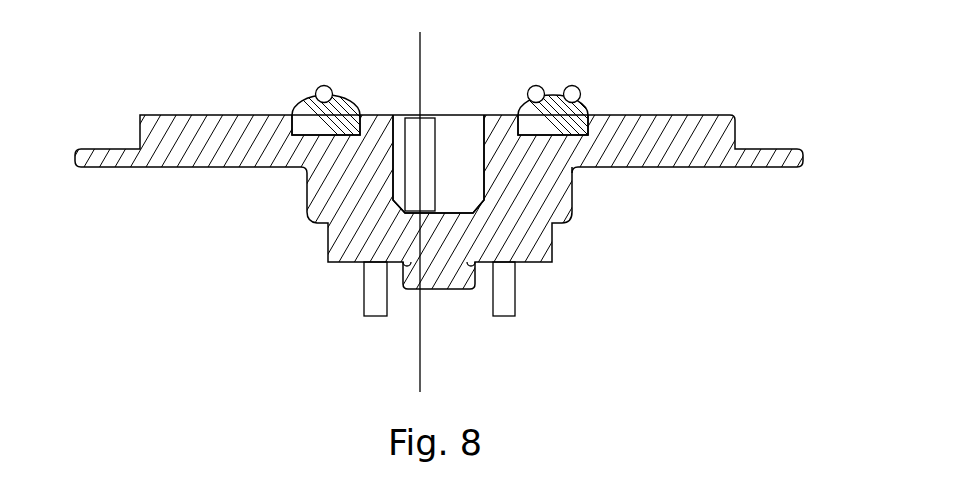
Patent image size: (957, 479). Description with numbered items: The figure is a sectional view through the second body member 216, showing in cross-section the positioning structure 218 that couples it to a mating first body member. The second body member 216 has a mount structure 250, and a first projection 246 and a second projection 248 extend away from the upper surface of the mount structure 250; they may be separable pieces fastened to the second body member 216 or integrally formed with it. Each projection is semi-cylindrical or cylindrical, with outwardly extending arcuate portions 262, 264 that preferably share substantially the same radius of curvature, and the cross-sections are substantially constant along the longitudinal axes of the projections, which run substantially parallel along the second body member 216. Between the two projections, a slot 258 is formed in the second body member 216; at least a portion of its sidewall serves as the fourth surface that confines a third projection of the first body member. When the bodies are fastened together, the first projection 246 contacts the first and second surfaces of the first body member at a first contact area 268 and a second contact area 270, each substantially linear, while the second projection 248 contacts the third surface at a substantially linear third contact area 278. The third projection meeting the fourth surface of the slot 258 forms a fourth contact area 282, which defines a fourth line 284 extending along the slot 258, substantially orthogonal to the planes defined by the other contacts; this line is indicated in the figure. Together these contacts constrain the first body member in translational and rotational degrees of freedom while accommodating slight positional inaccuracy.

The second body member 216 is at (710, 141).
The positioning structure 218 is at (242, 100).
The first projection 246 is at (570, 128).
The second projection 248 is at (307, 128).
The mount structure 250 is at (180, 127).
The slot 258 is at (484, 152).
The arcuate portion 262 is at (350, 100).
The arcuate portion 264 is at (589, 104).
The first contact area 268 is at (576, 86).
The second contact area 270 is at (532, 86).
The third contact area 278 is at (320, 86).
The fourth contact area 282 is at (398, 183).
The fourth line 284 is at (408, 367).